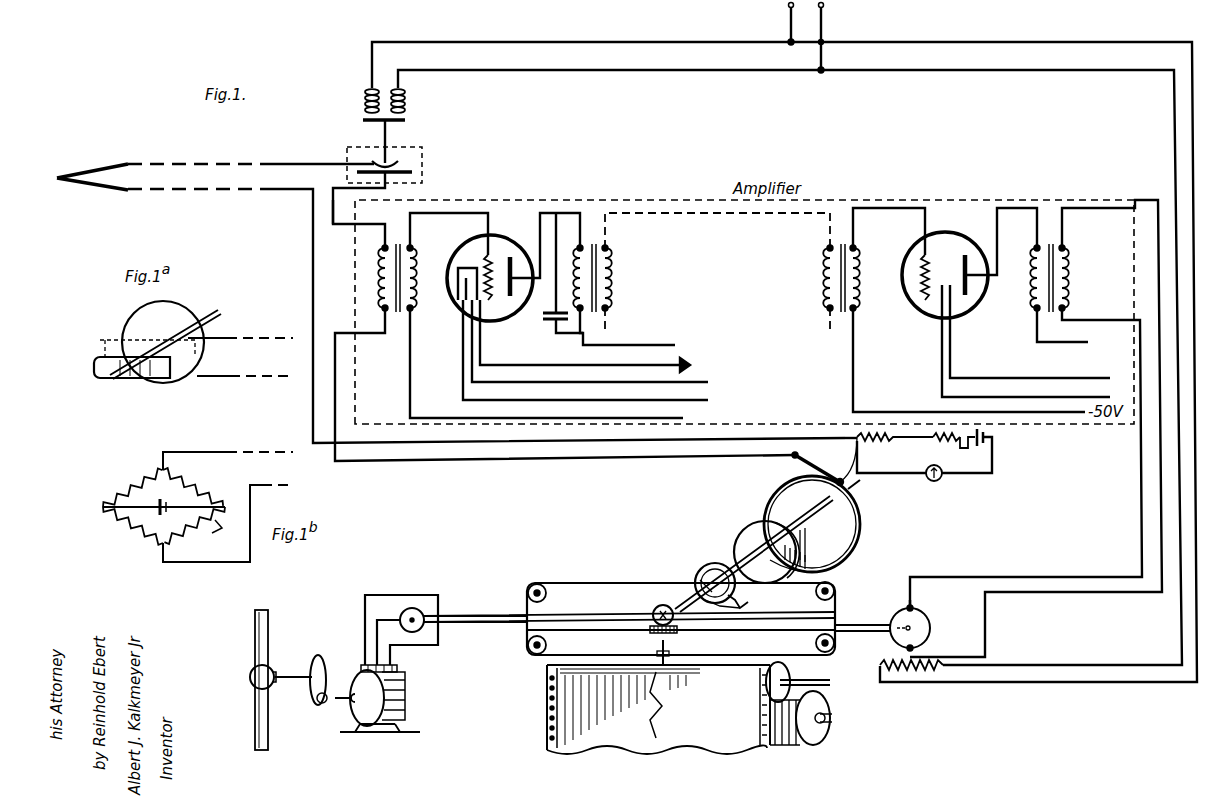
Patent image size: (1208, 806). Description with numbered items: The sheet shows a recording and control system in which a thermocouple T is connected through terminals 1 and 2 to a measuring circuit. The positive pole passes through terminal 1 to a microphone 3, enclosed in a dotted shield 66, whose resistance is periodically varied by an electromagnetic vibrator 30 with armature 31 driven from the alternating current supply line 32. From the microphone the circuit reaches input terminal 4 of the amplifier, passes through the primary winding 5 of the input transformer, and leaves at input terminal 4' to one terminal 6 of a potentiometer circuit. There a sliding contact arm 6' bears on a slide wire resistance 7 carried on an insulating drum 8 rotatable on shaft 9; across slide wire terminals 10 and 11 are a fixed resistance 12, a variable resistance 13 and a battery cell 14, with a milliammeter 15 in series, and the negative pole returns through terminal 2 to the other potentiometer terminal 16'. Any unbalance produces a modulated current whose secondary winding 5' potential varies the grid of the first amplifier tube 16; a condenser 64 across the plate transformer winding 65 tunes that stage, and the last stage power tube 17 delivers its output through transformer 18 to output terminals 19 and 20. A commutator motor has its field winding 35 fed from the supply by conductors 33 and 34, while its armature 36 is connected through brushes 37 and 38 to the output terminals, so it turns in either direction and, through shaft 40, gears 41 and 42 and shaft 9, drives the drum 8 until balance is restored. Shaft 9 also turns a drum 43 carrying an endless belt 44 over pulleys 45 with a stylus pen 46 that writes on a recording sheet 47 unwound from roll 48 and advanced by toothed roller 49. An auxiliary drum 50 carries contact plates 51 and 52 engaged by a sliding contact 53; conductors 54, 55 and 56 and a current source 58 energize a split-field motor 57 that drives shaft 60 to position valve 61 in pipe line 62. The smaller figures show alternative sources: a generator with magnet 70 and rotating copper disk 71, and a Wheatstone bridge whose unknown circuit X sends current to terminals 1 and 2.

In FIG. 1, the thermocouple T is at (97, 174).
In FIG. 1, the terminal 1 is at (251, 154).
In FIG. 1A, the terminal 1 is at (240, 327).
In FIG. 1B, the terminal 1 is at (228, 452).
In FIG. 1, the terminal 2 is at (486, 316).
In FIG. 1A, the terminal 2 is at (245, 390).
In FIG. 1B, the terminal 2 is at (228, 523).
In FIG. 1, the microphone 3 is at (400, 164).
In FIG. 1, the input terminal 4 is at (327, 226).
In FIG. 1, the input terminal 4' is at (557, 384).
In FIG. 1, the primary winding of input transformer 5 is at (380, 278).
In FIG. 1, the secondary winding of input transformer 5' is at (546, 315).
In FIG. 1, the terminal of potentiometer circuit 6 is at (810, 469).
In FIG. 1, the sliding contact arm 6' is at (799, 482).
In FIG. 1, the slide wire resistance 7 is at (858, 520).
In FIG. 1, the insulating drum 8 is at (852, 538).
In FIG. 1, the shaft 9 is at (835, 560).
In FIG. 1, the terminal of slide wire 10 is at (856, 492).
In FIG. 1, the terminal of slide wire 11 is at (886, 457).
In FIG. 1, the fixed resistance 12 is at (885, 445).
In FIG. 1, the variable resistance 13 is at (945, 449).
In FIG. 1, the battery cell 14 is at (987, 433).
In FIG. 1, the milliammeter 15 is at (938, 480).
In FIG. 1, the first amplifier tube 16 is at (588, 320).
In FIG. 1, the terminal of potentiometer circuit 16' is at (826, 416).
In FIG. 1, the power tube 17 is at (960, 240).
In FIG. 1, the transformer 18 is at (1068, 270).
In FIG. 1, the output terminal 19 is at (1036, 417).
In FIG. 1, the output terminal 20 is at (1142, 318).
In FIG. 1, the electromagnetic vibrator 30 is at (406, 96).
In FIG. 1, the armature 31 is at (392, 124).
In FIG. 1, the alternating current supply line 32 is at (825, 9).
In FIG. 1, the conductor 33 is at (1036, 42).
In FIG. 1, the conductor 34 is at (1036, 70).
In FIG. 1, the field winding 35 is at (920, 670).
In FIG. 1, the armature 36 is at (926, 615).
In FIG. 1, the brush 37 is at (910, 608).
In FIG. 1, the brush 38 is at (819, 685).
In FIG. 1, the shaft 40 is at (806, 630).
In FIG. 1, the gear 41 is at (648, 632).
In FIG. 1, the gear 42 is at (657, 608).
In FIG. 1, the drum 43 is at (752, 543).
In FIG. 1, the endless belt 44 is at (612, 586).
In FIG. 1, the pulleys 45 is at (696, 620).
In FIG. 1, the stylus pen 46 is at (668, 652).
In FIG. 1, the recording sheet 47 is at (658, 709).
In FIG. 1, the roll 48 is at (832, 726).
In FIG. 1, the roller 49 is at (790, 672).
In FIG. 1, the auxiliary drum 50 is at (712, 565).
In FIG. 1, the arcuate contact plate 51 is at (747, 597).
In FIG. 1, the arcuate contact plate 52 is at (698, 572).
In FIG. 1, the sliding contact 53 is at (740, 612).
In FIG. 1, the conductor 54 is at (610, 608).
In FIG. 1, the conductor 55 is at (488, 614).
In FIG. 1, the conductor 56 is at (600, 632).
In FIG. 1, the motor 57 is at (408, 694).
In FIG. 1, the source of energizing current 58 is at (412, 608).
In FIG. 1, the shaft 60 is at (308, 670).
In FIG. 1, the valve 61 is at (250, 678).
In FIG. 1, the pipe line 62 is at (255, 630).
In FIG. 1, the condenser 64 is at (548, 322).
In FIG. 1, the transformer winding 65 is at (575, 278).
In FIG. 1, the magnetic and electrostatic shield 66 is at (347, 147).
In FIG. 1A, the magnet 70 is at (135, 378).
In FIG. 1A, the copper disk 71 is at (135, 328).
In FIG. 1B, the unknown circuit X is at (135, 537).